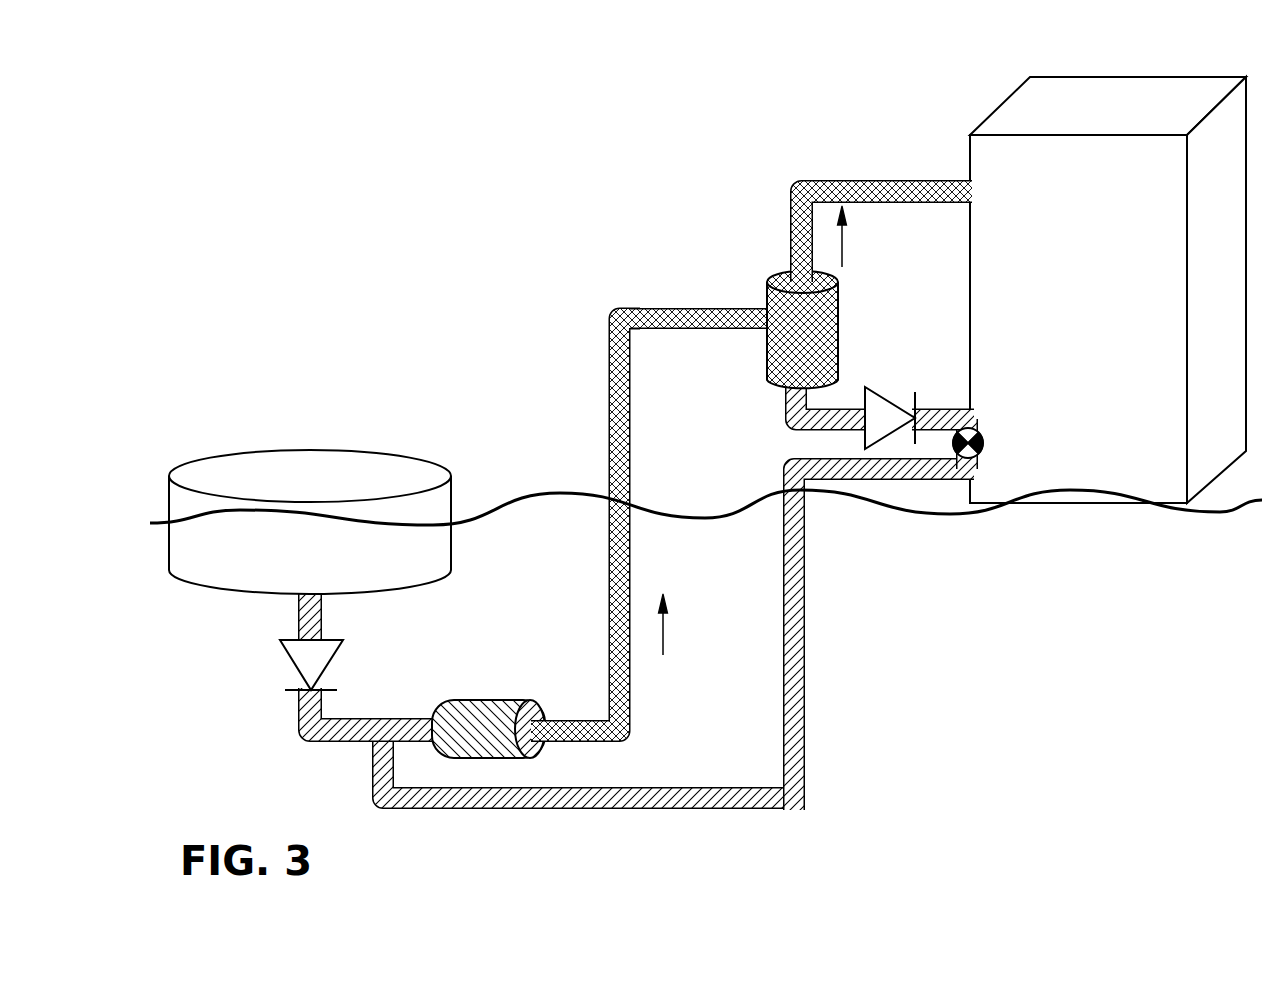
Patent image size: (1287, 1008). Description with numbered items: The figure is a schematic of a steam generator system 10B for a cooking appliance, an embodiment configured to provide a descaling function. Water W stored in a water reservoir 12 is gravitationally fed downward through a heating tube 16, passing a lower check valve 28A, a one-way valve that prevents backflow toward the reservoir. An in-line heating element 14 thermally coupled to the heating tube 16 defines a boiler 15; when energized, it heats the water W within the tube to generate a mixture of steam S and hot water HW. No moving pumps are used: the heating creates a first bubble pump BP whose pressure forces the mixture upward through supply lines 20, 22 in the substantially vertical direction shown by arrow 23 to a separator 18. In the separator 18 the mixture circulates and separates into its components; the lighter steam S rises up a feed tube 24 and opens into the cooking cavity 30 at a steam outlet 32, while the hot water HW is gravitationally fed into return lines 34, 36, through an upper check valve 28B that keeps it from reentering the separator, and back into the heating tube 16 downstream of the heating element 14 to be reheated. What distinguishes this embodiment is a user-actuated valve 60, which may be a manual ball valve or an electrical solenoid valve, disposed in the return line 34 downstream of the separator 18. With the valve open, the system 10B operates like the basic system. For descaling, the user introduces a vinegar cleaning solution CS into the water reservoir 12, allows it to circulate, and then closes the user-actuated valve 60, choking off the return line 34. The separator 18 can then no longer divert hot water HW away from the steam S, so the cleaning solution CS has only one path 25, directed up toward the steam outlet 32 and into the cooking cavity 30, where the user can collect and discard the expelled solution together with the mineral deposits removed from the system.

The steam generator system 10B is at (462, 314).
The water reservoir 12 is at (228, 457).
The in-line heating element 14 is at (456, 699).
The boiler 15 is at (516, 690).
The heating tube 16 is at (335, 742).
The separator 18 is at (840, 300).
The supply line 20 is at (610, 408).
The supply line 22 is at (690, 328).
The arrow 23 is at (663, 625).
The feed tube 24 is at (862, 178).
The path 25 is at (843, 238).
The lower check valve 28A is at (288, 662).
The upper check valve 28B is at (885, 397).
The cooking cavity 30 is at (1096, 100).
The steam outlet 32 is at (966, 180).
The return line 34 is at (940, 407).
The return line 36 is at (538, 812).
The user-actuated valve 60 is at (982, 447).
The cleaning solution CS is at (305, 444).
The water W is at (354, 479).
The hot water HW is at (800, 182).
The steam S is at (795, 234).
The first bubble pump BP is at (616, 676).